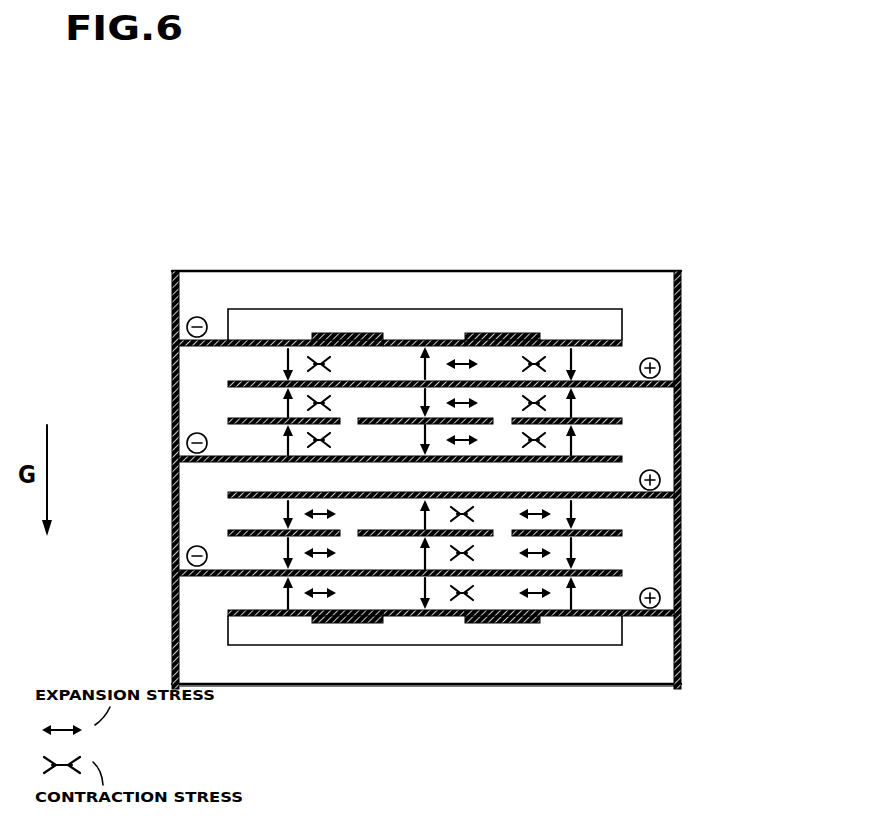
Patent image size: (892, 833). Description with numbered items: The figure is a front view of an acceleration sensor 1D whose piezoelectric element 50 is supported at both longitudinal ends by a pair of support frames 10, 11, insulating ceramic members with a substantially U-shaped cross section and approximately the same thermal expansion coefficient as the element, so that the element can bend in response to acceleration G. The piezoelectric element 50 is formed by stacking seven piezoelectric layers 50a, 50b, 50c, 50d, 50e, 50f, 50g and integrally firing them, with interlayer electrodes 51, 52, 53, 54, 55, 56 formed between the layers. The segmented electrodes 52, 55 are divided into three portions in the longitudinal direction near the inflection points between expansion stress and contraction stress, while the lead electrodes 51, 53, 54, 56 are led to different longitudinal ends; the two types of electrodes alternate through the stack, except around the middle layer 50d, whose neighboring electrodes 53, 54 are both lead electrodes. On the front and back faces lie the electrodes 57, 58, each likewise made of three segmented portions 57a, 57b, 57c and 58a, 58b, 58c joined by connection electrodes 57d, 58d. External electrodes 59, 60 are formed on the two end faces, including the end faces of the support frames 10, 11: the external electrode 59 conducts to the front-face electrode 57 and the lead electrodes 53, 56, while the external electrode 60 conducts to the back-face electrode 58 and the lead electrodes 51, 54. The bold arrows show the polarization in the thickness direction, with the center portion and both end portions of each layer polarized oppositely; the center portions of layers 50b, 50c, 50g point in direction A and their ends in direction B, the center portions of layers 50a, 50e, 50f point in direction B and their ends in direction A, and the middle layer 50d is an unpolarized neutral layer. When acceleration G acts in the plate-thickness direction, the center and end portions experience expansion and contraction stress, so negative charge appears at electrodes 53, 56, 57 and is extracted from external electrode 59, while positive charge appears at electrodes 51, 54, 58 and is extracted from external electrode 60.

The acceleration sensor 1D is at (672, 253).
The support frame 10 is at (600, 285).
The support frame 11 is at (605, 682).
The piezoelectric element 50 is at (758, 590).
The piezoelectric layer 50a is at (633, 362).
The piezoelectric layer 50b is at (622, 406).
The piezoelectric layer 50c is at (622, 443).
The piezoelectric layer 50d is at (622, 478).
The piezoelectric layer 50e is at (622, 516).
The piezoelectric layer 50f is at (622, 553).
The piezoelectric layer 50g is at (622, 592).
The lead electrode 51 is at (228, 381).
The segmented electrode 52 is at (228, 419).
The lead electrode 53 is at (228, 456).
The lead electrode 54 is at (228, 493).
The segmented electrode 55 is at (228, 531).
The lead electrode 56 is at (228, 576).
The front-face electrode 57 is at (543, 208).
The segmented front-face electrode portion 57a is at (410, 340).
The segmented front-face electrode portion 57b is at (285, 340).
The segmented front-face electrode portion 57c is at (560, 340).
The connection electrode 57d is at (490, 333).
The back-face electrode 58 is at (543, 742).
The segmented back-face electrode portion 58a is at (420, 617).
The segmented back-face electrode portion 58b is at (280, 617).
The segmented back-face electrode portion 58c is at (562, 617).
The connection electrode 58d is at (497, 617).
The external electrode 59 is at (172, 318).
The external electrode 60 is at (681, 307).